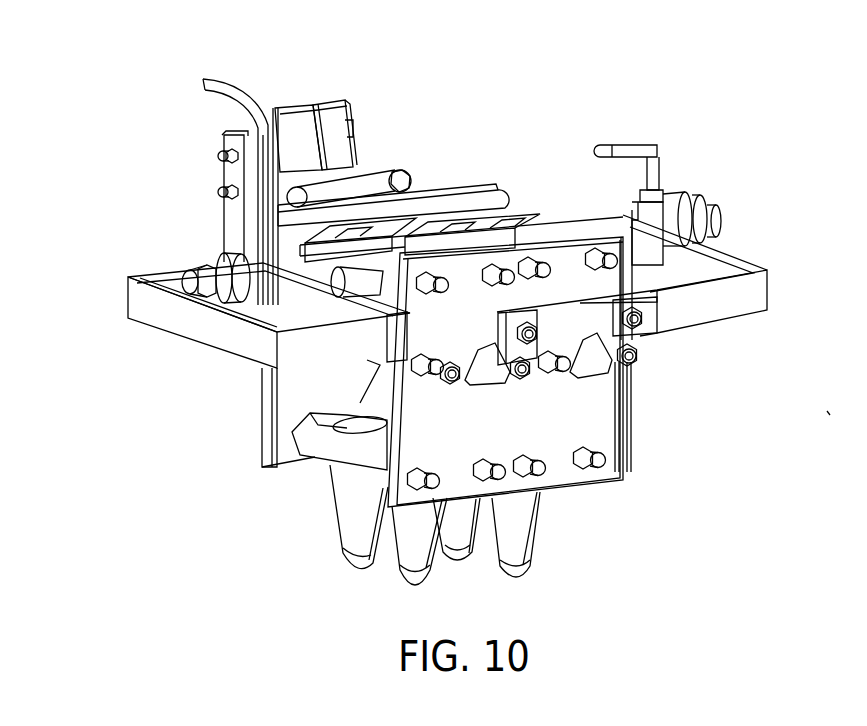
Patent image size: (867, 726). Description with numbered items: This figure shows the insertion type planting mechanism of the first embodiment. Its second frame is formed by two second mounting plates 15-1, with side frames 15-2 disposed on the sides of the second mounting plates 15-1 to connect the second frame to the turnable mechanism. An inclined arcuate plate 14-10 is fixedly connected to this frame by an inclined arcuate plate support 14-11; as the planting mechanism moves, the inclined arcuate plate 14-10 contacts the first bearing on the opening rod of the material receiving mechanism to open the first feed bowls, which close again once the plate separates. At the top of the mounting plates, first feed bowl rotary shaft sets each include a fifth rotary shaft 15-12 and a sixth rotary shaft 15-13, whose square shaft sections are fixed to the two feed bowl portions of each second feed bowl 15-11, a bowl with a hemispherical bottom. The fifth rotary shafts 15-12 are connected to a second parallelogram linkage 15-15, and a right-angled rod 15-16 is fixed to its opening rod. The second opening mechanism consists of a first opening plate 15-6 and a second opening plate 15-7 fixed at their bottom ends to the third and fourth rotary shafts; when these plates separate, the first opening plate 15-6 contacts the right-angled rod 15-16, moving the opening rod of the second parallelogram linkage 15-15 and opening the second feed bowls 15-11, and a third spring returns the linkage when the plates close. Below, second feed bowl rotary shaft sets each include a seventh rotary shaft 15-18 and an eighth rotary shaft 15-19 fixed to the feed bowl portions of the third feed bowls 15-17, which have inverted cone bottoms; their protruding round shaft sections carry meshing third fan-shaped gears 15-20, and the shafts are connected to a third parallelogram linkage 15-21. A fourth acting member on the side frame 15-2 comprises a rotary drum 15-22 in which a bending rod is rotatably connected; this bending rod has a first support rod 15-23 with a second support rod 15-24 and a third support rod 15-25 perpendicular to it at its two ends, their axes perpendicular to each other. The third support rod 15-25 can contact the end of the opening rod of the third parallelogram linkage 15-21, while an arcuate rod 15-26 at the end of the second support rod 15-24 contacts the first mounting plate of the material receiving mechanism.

The inclined arcuate plate 14-10 is at (243, 110).
The inclined arcuate plate support 14-11 is at (233, 220).
The second mounting plate 15-1 is at (602, 412).
The side frame 15-2 is at (155, 310).
The first opening plate 15-6 is at (328, 125).
The second opening plate 15-7 is at (303, 130).
The second feed bowl 15-11 is at (352, 272).
The fifth rotary shaft 15-12 is at (453, 217).
The sixth rotary shaft 15-13 is at (513, 240).
The second parallelogram linkage 15-15 is at (352, 185).
The right-angled rod 15-16 is at (413, 170).
The third feed bowl 15-17 is at (355, 373).
The seventh rotary shaft 15-18 is at (510, 375).
The eighth rotary shaft 15-19 is at (447, 388).
The third fan-shaped gear 15-20 is at (490, 378).
The third parallelogram linkage 15-21 is at (633, 347).
The rotary drum 15-22 is at (687, 213).
The first support rod 15-23 is at (660, 172).
The second support rod 15-24 is at (650, 145).
The third support rod 15-25 is at (670, 280).
The arcuate rod 15-26 is at (608, 145).